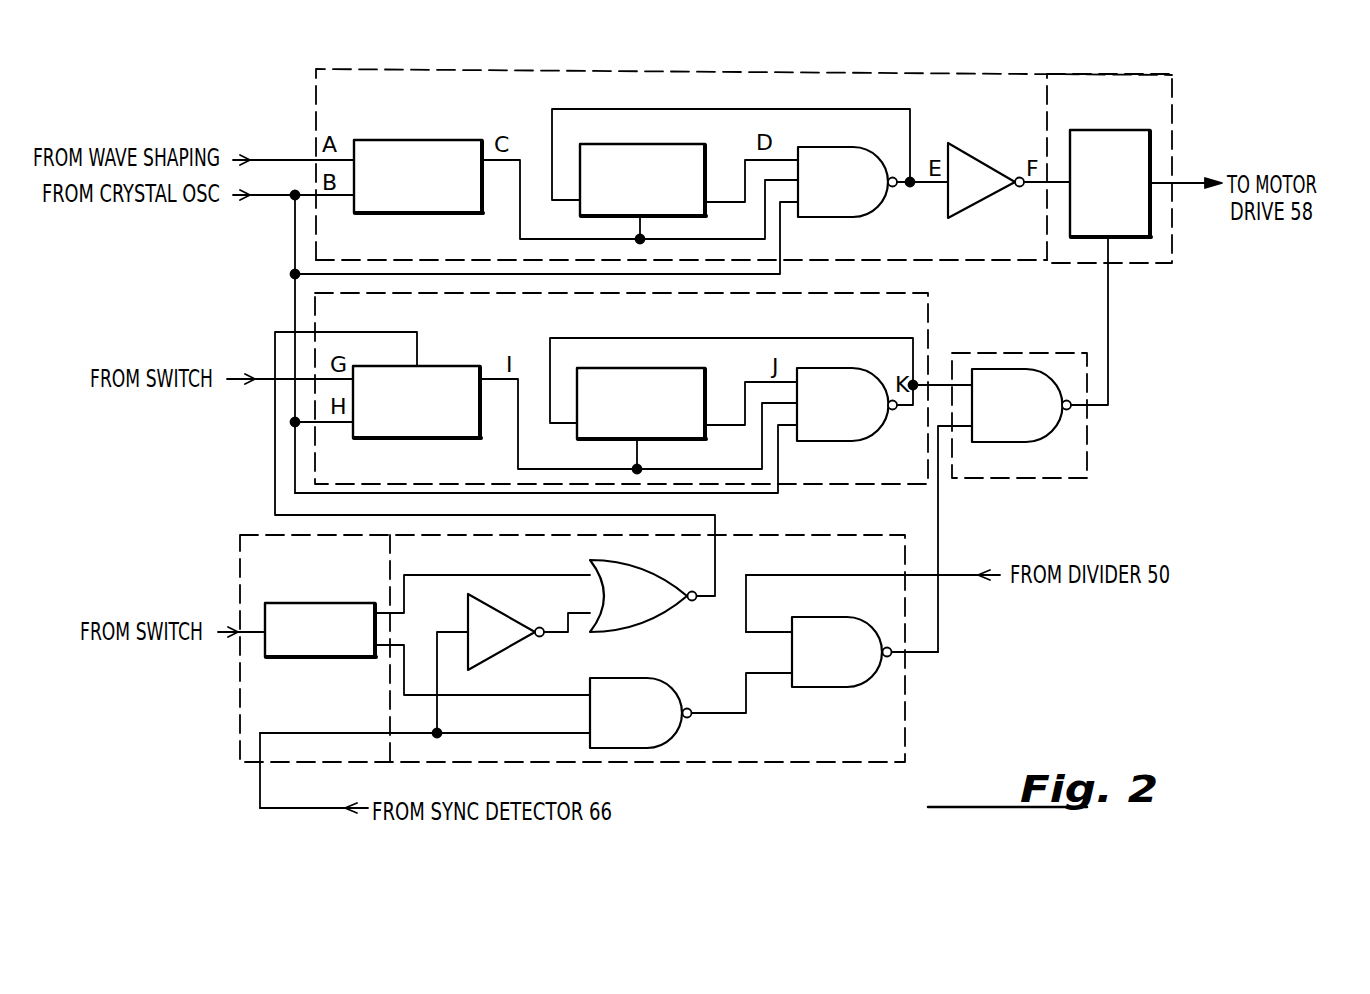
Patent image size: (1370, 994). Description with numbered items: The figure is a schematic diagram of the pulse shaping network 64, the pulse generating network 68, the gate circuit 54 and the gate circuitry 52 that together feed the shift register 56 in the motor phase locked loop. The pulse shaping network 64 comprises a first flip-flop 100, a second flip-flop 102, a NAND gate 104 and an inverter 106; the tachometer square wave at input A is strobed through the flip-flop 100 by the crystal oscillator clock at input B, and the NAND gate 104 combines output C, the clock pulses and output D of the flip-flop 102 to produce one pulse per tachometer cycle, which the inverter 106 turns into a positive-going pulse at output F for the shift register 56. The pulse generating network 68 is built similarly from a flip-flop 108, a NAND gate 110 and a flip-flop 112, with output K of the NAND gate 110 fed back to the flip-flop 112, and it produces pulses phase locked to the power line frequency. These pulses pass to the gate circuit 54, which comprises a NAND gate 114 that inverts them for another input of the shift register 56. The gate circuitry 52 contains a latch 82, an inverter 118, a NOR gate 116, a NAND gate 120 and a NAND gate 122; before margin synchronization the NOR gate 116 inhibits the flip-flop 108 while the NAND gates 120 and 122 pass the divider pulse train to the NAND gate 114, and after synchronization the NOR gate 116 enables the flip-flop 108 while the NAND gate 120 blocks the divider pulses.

The pulse shaping network 64 is at (647, 68).
The shift register 56 is at (1101, 74).
The first flip-flop 100 is at (403, 148).
The second flip-flop 102 is at (650, 150).
The NAND gate 104 is at (835, 153).
The inverter 106 is at (957, 155).
The pulse generating network 68 is at (930, 326).
The flip-flop 108 is at (456, 374).
The flip-flop 112 is at (683, 380).
The NAND gate 110 is at (822, 380).
The NAND gate 114 is at (1017, 378).
The gate circuit 54 is at (1088, 460).
The latch 82 is at (240, 562).
The inverter 118 is at (486, 614).
The NOR gate 116 is at (645, 619).
The NAND gate 120 is at (667, 738).
The NAND gate 122 is at (824, 629).
The gate circuitry 52 is at (906, 744).